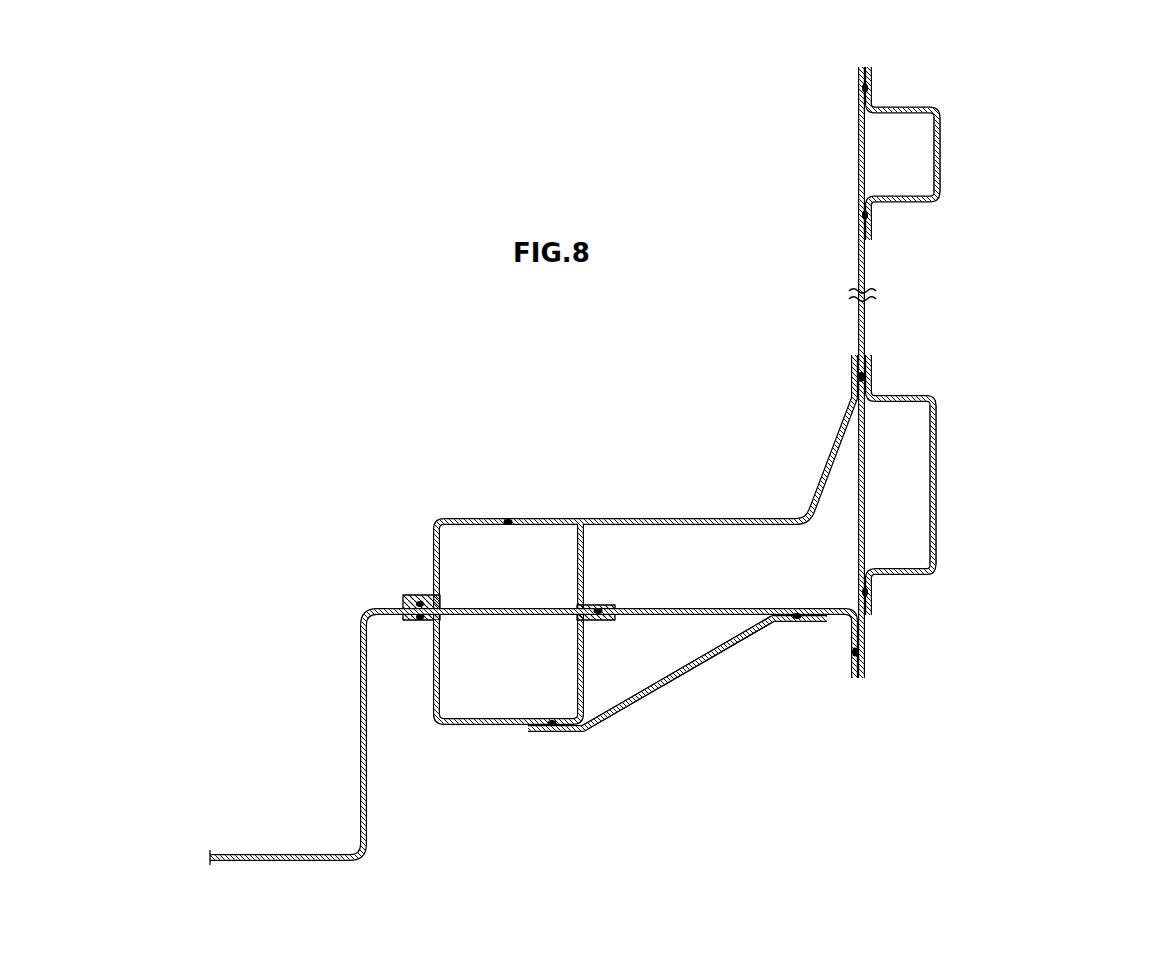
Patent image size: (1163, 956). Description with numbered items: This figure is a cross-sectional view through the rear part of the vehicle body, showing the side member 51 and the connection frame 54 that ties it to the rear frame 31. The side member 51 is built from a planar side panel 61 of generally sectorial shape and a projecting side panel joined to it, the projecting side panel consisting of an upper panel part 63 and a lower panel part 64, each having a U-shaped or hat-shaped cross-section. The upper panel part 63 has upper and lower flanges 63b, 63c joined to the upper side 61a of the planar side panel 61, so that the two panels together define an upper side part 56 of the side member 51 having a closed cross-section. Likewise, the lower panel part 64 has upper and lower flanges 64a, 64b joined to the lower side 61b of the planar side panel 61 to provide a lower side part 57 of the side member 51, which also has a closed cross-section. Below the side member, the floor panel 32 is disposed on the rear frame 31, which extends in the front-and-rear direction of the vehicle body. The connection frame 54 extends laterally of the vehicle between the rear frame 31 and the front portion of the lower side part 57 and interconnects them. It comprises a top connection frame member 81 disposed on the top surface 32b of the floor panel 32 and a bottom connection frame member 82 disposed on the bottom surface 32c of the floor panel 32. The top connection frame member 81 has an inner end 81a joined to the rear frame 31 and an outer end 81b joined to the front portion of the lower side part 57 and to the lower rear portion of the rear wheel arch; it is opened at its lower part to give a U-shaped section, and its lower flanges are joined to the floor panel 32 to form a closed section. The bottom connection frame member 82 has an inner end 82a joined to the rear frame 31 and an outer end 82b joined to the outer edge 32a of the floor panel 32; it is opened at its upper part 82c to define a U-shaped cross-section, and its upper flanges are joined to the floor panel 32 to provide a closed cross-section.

The rear frame 31 is at (433, 682).
The floor panel 32 is at (690, 628).
The outer edge of the floor panel 32a is at (856, 645).
The top surface of the floor panel 32b is at (693, 628).
The bottom surface of the floor panel 32c is at (723, 620).
The side member 51 is at (1000, 308).
The connection frame 54 is at (720, 422).
The upper side part of the side member 56 is at (945, 148).
The lower side part of the side member 57 is at (940, 470).
The planar side panel 61 is at (858, 242).
The upper side of the planar side panel 61a is at (860, 85).
The lower side of the planar side panel 61b is at (858, 600).
The upper panel part 63 is at (948, 168).
The upper flange of the upper panel part 63b is at (872, 90).
The lower flange of the upper panel part 63c is at (872, 222).
The lower panel part 64 is at (938, 520).
The upper flange of the lower panel part 64a is at (872, 368).
The lower flange of the lower panel part 64b is at (872, 600).
The top connection frame member 81 is at (710, 520).
The inner end of the top connection frame member 81a is at (480, 517).
The outer end of the top connection frame member 81b is at (852, 375).
The bottom connection frame member 82 is at (632, 712).
The inner end of the bottom connection frame member 82a is at (550, 732).
The outer end of the bottom connection frame member 82b is at (797, 624).
The upper part of the bottom connection frame member 82c is at (703, 626).